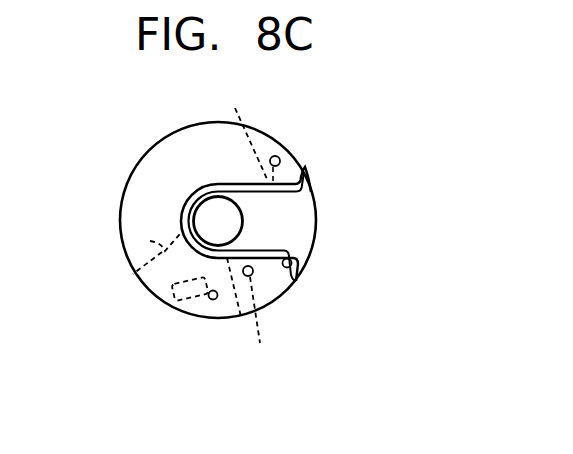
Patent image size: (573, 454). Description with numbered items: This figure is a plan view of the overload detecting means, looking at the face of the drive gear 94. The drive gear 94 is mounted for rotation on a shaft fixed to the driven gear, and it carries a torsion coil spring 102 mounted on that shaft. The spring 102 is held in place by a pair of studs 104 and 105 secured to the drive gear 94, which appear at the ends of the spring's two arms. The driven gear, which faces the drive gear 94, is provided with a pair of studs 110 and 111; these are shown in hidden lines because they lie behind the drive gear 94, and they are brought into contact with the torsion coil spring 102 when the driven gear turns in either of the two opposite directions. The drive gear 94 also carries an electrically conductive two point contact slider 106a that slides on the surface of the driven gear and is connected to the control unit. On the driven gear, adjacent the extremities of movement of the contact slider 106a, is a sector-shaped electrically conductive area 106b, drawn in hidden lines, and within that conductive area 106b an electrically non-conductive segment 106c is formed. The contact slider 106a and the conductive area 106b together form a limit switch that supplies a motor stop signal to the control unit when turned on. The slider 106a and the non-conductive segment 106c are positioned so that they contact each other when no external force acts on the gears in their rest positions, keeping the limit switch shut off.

The drive gear 94 is at (276, 136).
The torsion coil spring 102 is at (188, 200).
The stud 104 is at (281, 159).
The stud 105 is at (292, 272).
The contact slider 106a is at (212, 300).
The conductive area 106b is at (150, 241).
The non-conductive segment 106c is at (175, 298).
The stud 110 is at (265, 313).
The stud 111 is at (244, 132).